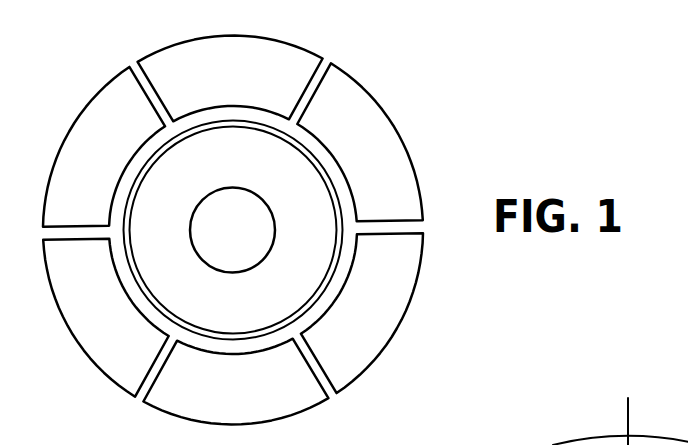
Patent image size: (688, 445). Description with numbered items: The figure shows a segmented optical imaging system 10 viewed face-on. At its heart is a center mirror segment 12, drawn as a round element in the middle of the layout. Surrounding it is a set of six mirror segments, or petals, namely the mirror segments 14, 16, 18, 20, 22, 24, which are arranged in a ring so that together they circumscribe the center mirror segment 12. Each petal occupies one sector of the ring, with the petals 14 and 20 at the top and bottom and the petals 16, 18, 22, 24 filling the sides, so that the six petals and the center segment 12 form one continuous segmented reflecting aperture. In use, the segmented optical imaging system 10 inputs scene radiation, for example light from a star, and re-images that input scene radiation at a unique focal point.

The segmented optical imaging system 10 is at (419, 134).
The center mirror segment 12 is at (244, 315).
The mirror segment 14 is at (214, 83).
The mirror segment 16 is at (349, 163).
The mirror segment 18 is at (354, 324).
The mirror segment 20 is at (210, 401).
The mirror segment 22 is at (76, 327).
The mirror segment 24 is at (76, 163).